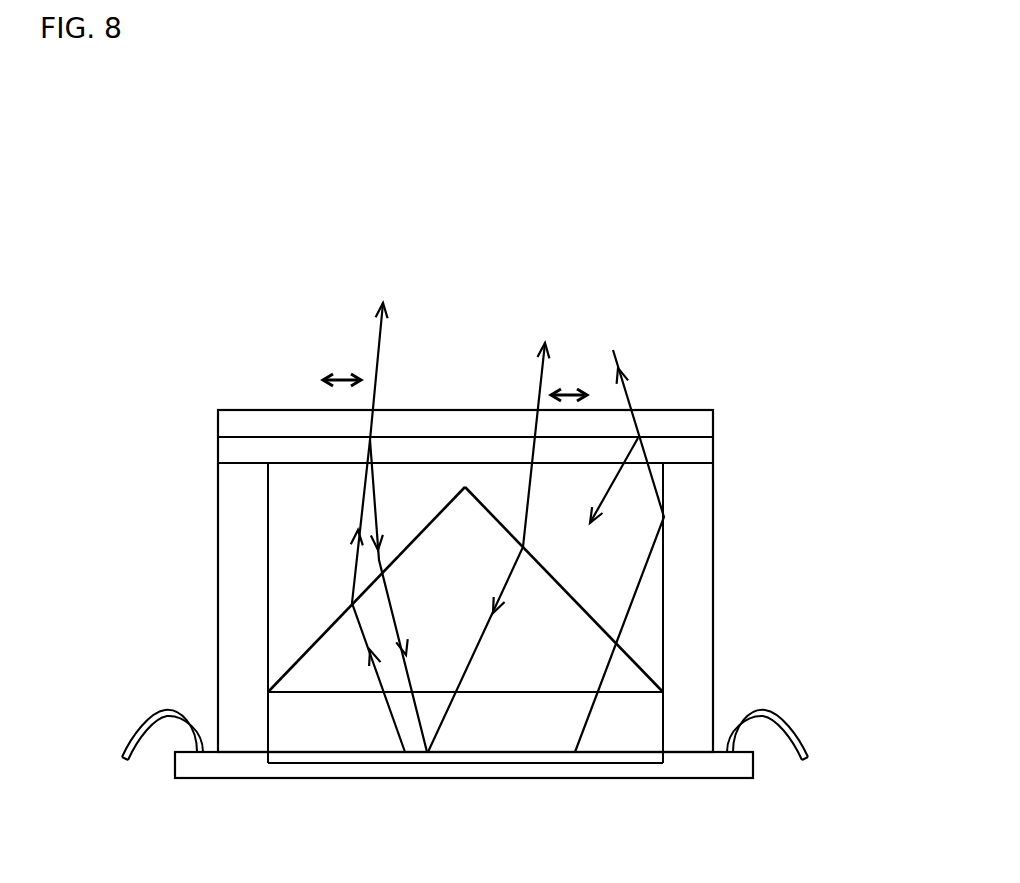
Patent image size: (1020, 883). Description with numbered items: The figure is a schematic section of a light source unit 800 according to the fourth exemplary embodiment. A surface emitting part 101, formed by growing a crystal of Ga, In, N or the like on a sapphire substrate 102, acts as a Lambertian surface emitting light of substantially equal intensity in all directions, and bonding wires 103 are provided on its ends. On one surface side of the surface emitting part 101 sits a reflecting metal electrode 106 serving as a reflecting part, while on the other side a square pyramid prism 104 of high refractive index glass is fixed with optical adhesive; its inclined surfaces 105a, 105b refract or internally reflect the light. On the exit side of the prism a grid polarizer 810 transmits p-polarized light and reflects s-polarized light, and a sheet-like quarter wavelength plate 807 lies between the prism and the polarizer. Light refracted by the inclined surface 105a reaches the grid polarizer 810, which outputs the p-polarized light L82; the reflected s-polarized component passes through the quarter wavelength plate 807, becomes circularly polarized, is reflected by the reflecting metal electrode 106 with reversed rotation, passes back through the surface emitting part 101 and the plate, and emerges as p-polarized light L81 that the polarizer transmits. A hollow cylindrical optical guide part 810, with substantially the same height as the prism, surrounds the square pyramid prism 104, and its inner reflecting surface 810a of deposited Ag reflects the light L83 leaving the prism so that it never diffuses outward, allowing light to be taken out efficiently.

The light source unit 800 is at (465, 541).
The grid polarizer 810 is at (710, 421).
The quarter wavelength plate 807 is at (710, 455).
The reflecting surface 810a is at (655, 591).
The square pyramid prism 104 is at (645, 665).
The inclined surface 105a is at (567, 592).
The inclined surface 105b is at (318, 636).
The surface emitting part 101 is at (314, 746).
The sapphire substrate 102 is at (520, 727).
The reflecting metal electrode 106 is at (613, 758).
The bonding wires 103 is at (133, 732).
The p-polarized light L81 is at (538, 390).
The p-polarized light L82 is at (372, 347).
The light L83 is at (638, 428).